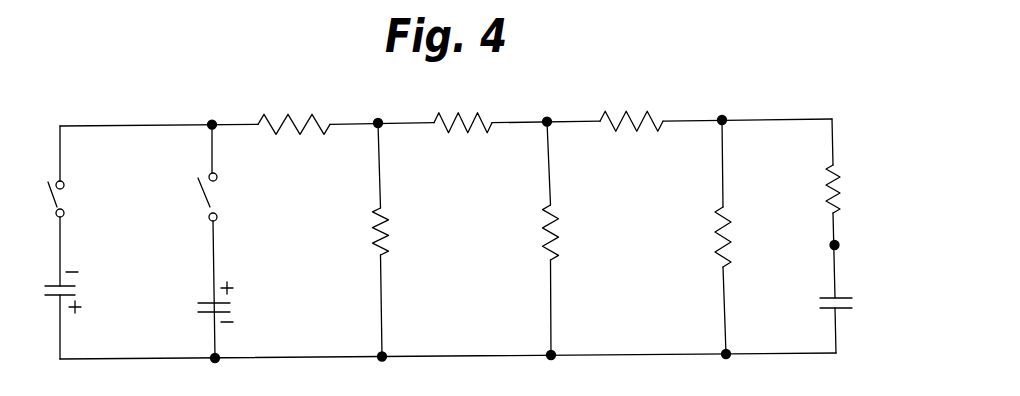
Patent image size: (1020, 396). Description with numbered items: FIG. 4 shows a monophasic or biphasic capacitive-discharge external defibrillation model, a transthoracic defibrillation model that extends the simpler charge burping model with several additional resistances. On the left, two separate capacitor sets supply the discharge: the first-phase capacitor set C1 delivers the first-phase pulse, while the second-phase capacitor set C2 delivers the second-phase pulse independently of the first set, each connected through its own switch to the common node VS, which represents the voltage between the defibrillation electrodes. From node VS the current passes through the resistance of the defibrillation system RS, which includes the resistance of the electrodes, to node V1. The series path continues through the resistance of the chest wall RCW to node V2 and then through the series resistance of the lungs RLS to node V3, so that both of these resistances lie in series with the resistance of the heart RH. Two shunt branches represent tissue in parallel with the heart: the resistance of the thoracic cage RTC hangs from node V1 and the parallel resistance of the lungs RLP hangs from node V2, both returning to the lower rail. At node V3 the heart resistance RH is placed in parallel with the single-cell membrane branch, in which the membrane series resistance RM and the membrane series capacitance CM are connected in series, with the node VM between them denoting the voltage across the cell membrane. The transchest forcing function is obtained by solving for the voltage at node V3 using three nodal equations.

The φ1 capacitor set C1 is at (36, 290).
The φ2 capacitor set C2 is at (238, 307).
The node VS is at (221, 98).
The resistance of the defibrillation system RS is at (294, 100).
The node V1 is at (387, 103).
The resistance of the thoracic cage RTC is at (419, 240).
The resistance of the chest wall RCW is at (468, 100).
The node V2 is at (551, 96).
The parallel resistance of the lungs RLP is at (587, 238).
The series resistance of the lungs RLS is at (631, 99).
The node V3 is at (722, 96).
The resistance of the heart RH is at (749, 237).
The membrane series resistance RM is at (860, 184).
The voltage across the cell membrane VM is at (862, 244).
The membrane series capacitance CM is at (863, 309).